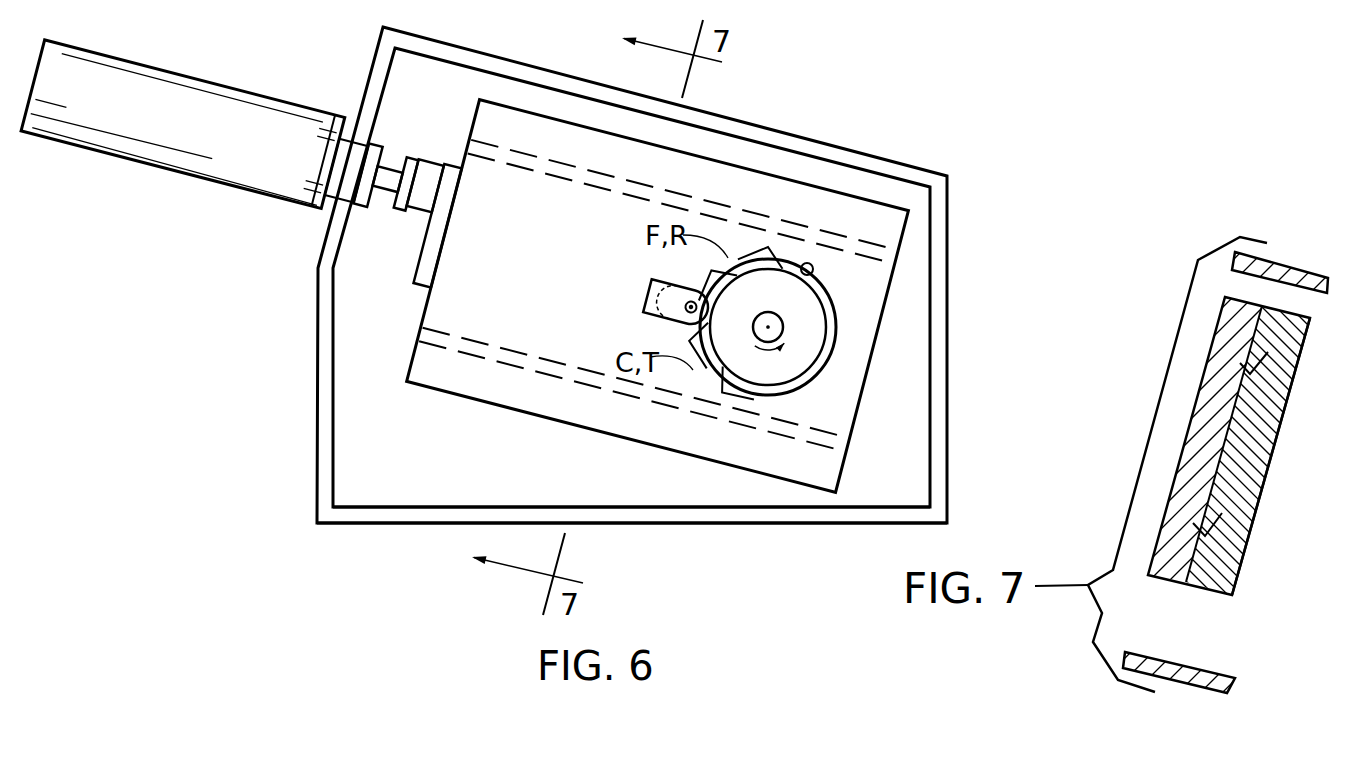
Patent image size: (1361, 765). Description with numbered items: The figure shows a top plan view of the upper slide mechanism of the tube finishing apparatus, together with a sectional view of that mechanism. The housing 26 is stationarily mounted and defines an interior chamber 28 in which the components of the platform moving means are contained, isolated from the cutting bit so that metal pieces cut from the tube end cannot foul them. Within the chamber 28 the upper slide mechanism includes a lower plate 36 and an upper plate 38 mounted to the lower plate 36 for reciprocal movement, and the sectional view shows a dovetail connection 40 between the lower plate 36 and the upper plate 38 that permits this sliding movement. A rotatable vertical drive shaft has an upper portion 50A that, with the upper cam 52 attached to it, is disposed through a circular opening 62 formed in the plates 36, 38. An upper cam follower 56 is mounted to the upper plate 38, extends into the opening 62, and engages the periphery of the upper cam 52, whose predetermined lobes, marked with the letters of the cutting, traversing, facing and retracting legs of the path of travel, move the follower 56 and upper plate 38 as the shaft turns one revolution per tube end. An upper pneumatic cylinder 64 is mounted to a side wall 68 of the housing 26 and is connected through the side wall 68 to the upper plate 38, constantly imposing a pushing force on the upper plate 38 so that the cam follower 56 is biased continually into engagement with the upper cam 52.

In FIG. 6, the housing 26 is at (400, 527).
In FIG. 7, the housing 26 is at (1287, 256).
In FIG. 6, the interior chamber 28 is at (446, 485).
In FIG. 7, the lower plate 36 is at (1233, 570).
In FIG. 6, the upper plate 38 is at (738, 452).
In FIG. 7, the upper plate 38 is at (1232, 433).
In FIG. 7, the dovetail connection 40 is at (1235, 508).
In FIG. 6, the upper portion of the drive shaft 50A is at (783, 328).
In FIG. 6, the upper cam 52 is at (805, 355).
In FIG. 6, the upper cam follower 56 is at (690, 290).
In FIG. 6, the circular opening 62 is at (813, 270).
In FIG. 6, the upper pneumatic cylinder 64 is at (207, 80).
In FIG. 6, the side wall 68 is at (316, 462).